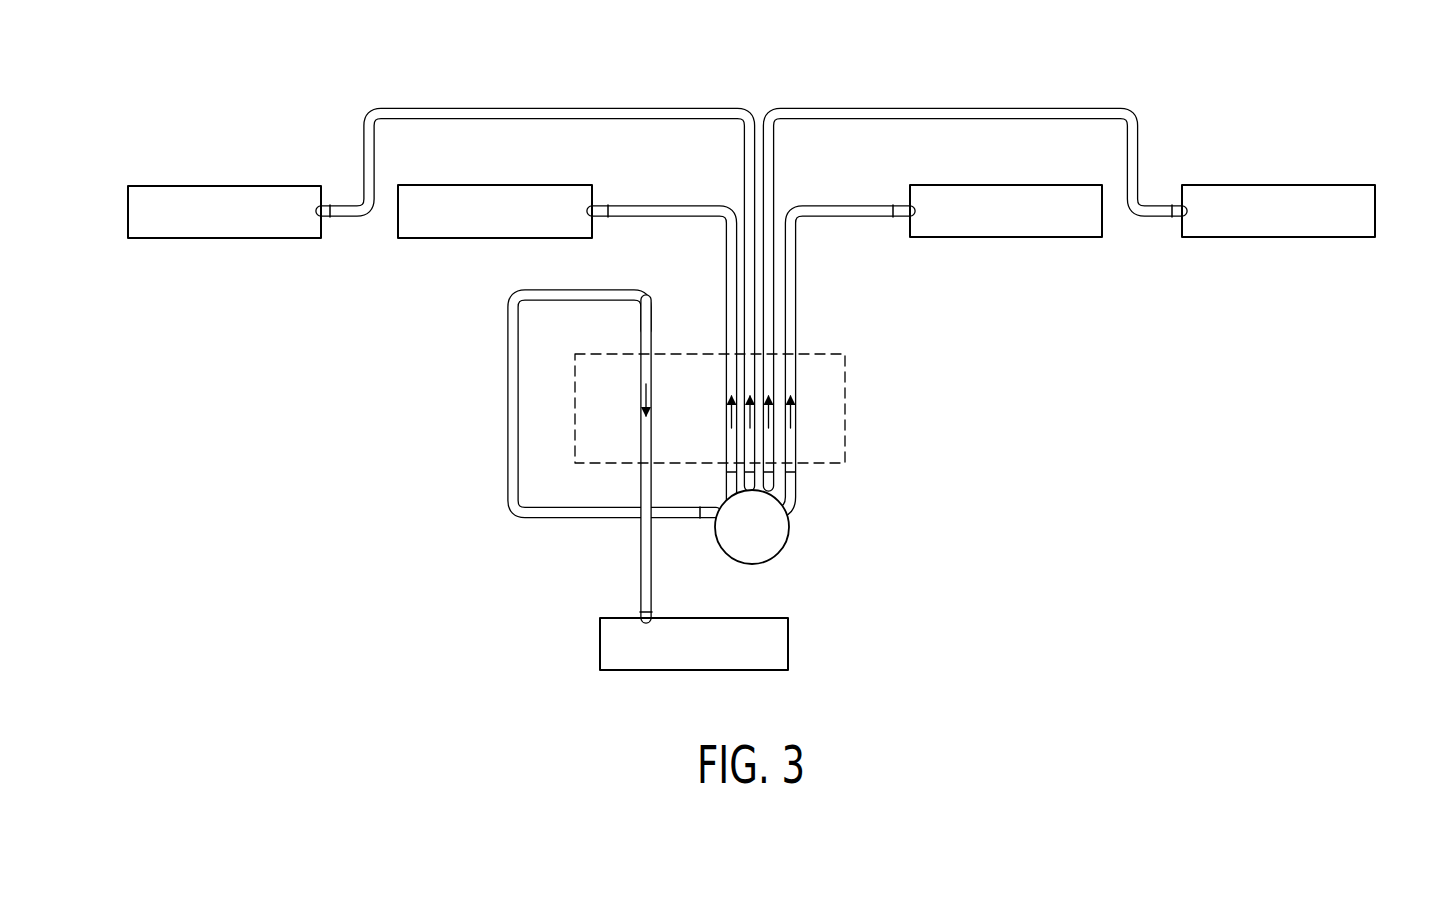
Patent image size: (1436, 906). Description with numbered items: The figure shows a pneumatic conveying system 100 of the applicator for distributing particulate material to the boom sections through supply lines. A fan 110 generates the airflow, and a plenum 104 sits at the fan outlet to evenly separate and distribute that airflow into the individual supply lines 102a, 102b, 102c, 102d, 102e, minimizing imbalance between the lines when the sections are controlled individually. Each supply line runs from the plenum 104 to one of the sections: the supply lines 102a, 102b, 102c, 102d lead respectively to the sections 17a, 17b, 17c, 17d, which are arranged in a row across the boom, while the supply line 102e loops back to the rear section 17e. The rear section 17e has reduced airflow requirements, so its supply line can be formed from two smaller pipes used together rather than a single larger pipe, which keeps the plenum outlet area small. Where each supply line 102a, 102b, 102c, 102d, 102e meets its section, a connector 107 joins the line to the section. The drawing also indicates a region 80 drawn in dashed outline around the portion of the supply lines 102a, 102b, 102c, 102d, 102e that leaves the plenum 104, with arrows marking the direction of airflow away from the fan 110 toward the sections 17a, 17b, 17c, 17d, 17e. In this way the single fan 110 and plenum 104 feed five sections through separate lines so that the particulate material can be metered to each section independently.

The fluid distribution system 100 is at (305, 76).
The supply line 102a is at (562, 106).
The supply line 102b is at (665, 219).
The supply line 102c is at (830, 219).
The supply line 102d is at (948, 106).
The supply line 102e is at (508, 360).
The plenum 104 is at (811, 506).
The connector 107 is at (330, 204).
The fan 110 is at (778, 553).
The control unit 80 is at (847, 407).
The section 17a is at (248, 195).
The section 17b is at (522, 196).
The section 17c is at (973, 195).
The section 17d is at (1253, 192).
The rear section 17e is at (718, 655).